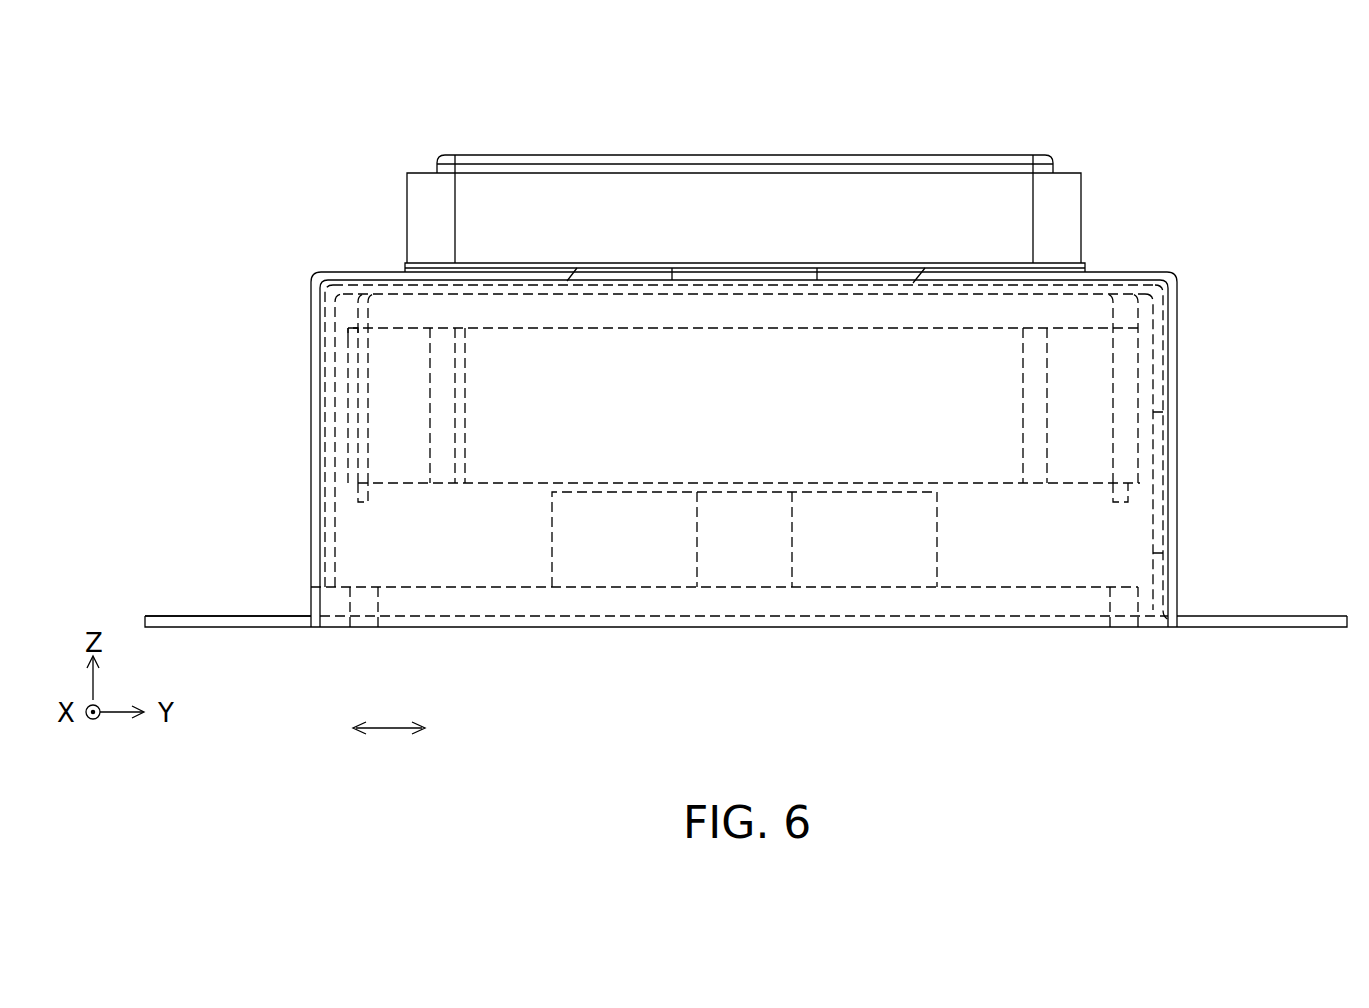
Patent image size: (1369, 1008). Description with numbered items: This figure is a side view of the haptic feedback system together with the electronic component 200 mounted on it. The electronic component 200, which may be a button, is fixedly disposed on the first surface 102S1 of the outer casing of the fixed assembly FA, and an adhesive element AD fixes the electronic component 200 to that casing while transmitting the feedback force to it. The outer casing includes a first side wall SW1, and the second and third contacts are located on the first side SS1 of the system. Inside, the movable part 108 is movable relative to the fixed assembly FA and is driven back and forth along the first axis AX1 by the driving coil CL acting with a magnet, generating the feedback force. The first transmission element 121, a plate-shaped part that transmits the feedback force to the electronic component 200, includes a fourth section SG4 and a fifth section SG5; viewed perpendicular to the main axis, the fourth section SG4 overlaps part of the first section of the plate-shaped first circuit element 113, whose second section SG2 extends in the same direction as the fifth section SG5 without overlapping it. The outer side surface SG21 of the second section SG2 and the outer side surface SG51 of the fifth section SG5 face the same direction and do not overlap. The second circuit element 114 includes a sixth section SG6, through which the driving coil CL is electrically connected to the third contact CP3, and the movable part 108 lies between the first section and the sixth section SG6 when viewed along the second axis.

The electronic component 200 is at (978, 158).
The adhesive element AD is at (632, 262).
The first transmission element 121 is at (1002, 280).
The first surface 102S1 is at (1140, 270).
The fixed assembly FA is at (1187, 320).
The first circuit element 113 is at (350, 288).
The fourth section SG4 is at (393, 293).
The outer side surface of the fifth section SG51 is at (348, 333).
The fifth section SG5 is at (362, 372).
The outer side surface of the second section SG21 is at (335, 408).
The second section SG2 is at (325, 446).
The first side SS1 is at (310, 477).
The first side wall SW1 is at (320, 520).
The third contact CP3 is at (183, 618).
The second circuit element 114 is at (275, 630).
The sixth section SG6 is at (598, 620).
The driving coil CL is at (852, 553).
The movable part 108 is at (955, 458).
The first axis AX1 is at (417, 729).